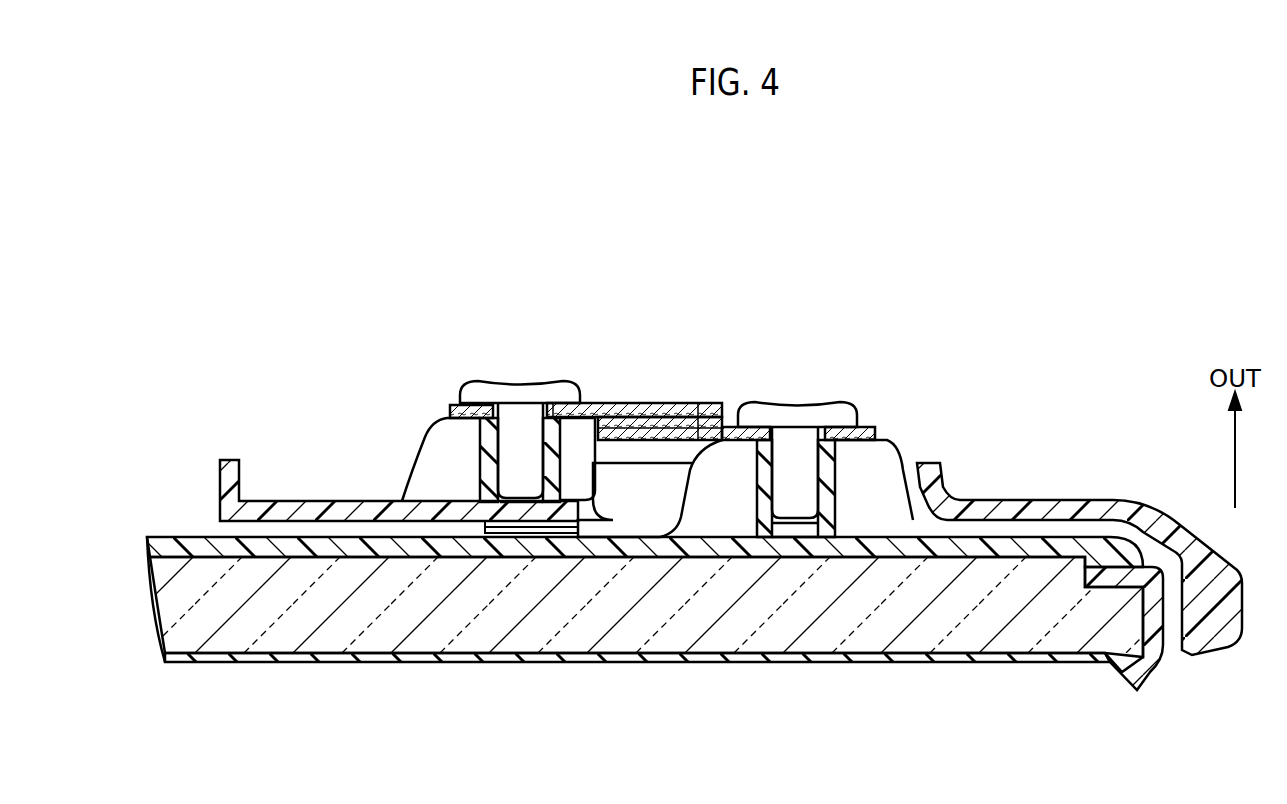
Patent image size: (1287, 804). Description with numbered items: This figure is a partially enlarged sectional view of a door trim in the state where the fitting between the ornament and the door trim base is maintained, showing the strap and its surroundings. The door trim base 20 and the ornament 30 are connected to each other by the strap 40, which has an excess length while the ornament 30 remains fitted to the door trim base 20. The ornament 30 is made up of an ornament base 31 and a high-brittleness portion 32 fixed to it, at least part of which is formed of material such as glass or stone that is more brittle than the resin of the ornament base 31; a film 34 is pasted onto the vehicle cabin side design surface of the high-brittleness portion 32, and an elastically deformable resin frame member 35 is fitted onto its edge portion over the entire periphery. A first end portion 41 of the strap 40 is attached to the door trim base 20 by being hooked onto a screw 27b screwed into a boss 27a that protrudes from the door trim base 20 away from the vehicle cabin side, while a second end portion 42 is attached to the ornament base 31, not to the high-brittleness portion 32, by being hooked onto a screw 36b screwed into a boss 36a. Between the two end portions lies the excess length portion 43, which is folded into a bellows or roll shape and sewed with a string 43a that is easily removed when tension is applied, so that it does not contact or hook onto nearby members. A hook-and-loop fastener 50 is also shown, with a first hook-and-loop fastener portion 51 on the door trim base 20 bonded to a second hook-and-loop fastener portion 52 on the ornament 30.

The door trim base 20 is at (1062, 500).
The boss 27a is at (487, 450).
The screw 27b is at (523, 403).
The ornament 30 is at (645, 647).
The ornament base 31 is at (358, 547).
The high-brittleness portion 32 is at (423, 640).
The film 34 is at (467, 662).
The frame member 35 is at (1153, 627).
The boss 36a is at (833, 475).
The screw 36b is at (795, 413).
The strap 40 is at (663, 392).
The first end portion 41 is at (487, 404).
The second end portion 42 is at (840, 426).
The excess length portion 43 is at (631, 480).
The string 43a is at (700, 445).
The hook-and-loop fastener 50 is at (551, 637).
The first hook-and-loop fastener portion 51 is at (527, 524).
The second hook-and-loop fastener portion 52 is at (562, 535).